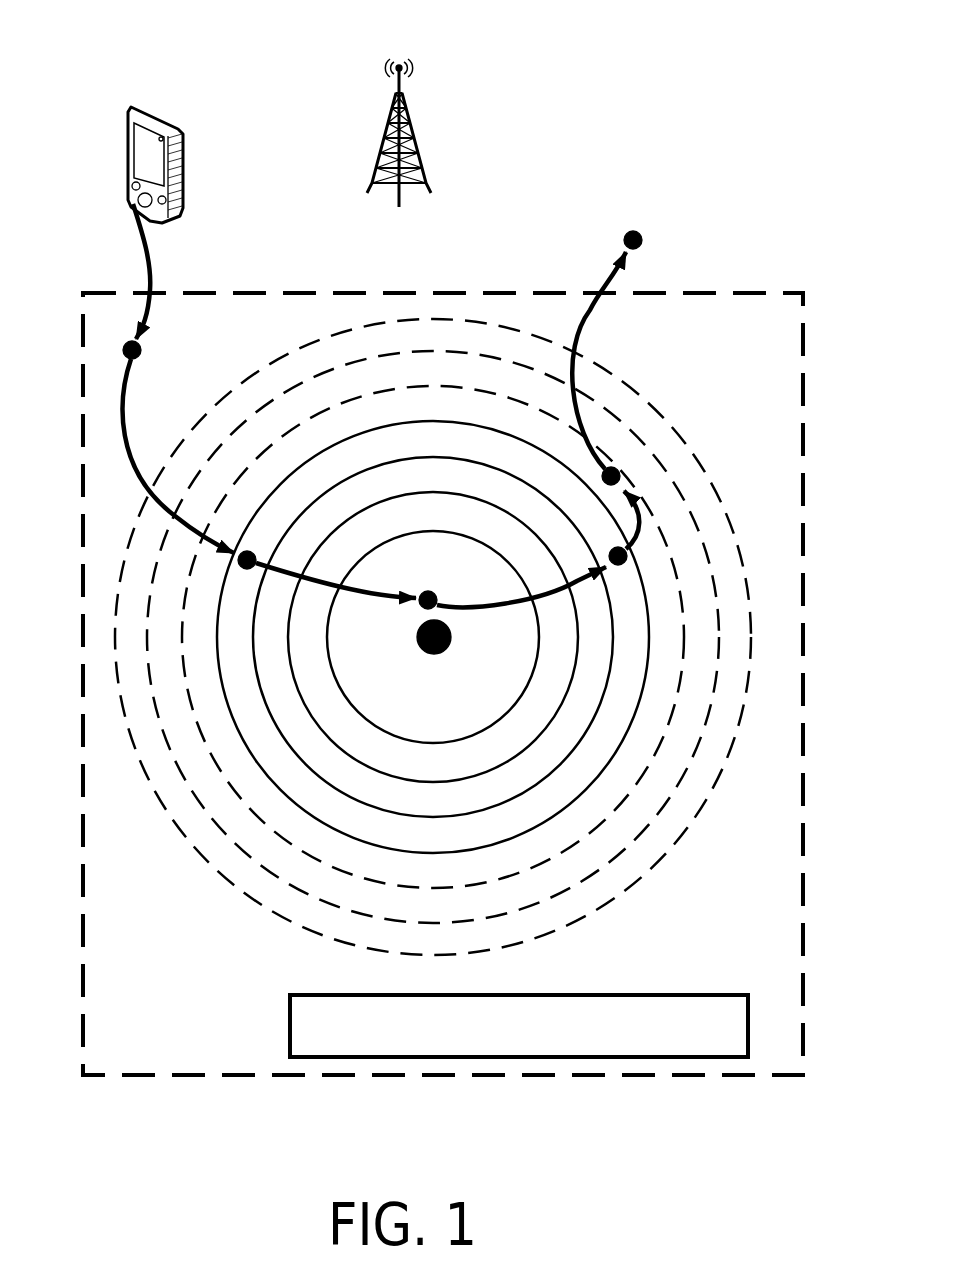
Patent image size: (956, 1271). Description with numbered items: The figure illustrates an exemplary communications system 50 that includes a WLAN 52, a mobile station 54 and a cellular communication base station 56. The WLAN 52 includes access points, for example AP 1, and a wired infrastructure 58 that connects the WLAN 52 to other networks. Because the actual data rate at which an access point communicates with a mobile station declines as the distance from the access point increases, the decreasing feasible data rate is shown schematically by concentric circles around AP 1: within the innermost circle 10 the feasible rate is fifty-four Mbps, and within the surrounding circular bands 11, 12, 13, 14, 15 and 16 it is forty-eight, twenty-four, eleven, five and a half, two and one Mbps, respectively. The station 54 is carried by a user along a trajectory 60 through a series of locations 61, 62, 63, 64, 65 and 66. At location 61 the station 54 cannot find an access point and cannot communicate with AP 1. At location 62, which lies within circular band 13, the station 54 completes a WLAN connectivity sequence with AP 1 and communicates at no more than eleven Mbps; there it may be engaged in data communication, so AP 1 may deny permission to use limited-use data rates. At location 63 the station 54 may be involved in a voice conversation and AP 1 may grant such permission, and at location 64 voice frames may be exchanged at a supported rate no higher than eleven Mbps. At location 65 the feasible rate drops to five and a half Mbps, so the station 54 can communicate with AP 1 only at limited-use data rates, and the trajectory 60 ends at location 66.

The access point 1 is at (452, 634).
The circle 10 is at (448, 732).
The circular band 11 is at (448, 777).
The circular band 12 is at (448, 814).
The circular band 13 is at (448, 851).
The circular band 14 is at (448, 882).
The circular band 15 is at (448, 919).
The circular band 16 is at (448, 952).
The communications system 50 is at (303, 88).
The WLAN 52 is at (213, 1037).
The mobile station 54 is at (183, 147).
The cellular communication base station 56 is at (378, 166).
The wired infrastructure 58 is at (718, 1039).
The trajectory 60 is at (153, 274).
The location 61 is at (141, 350).
The location 62 is at (252, 553).
The location 63 is at (429, 591).
The location 64 is at (618, 548).
The location 65 is at (640, 458).
The location 66 is at (639, 235).